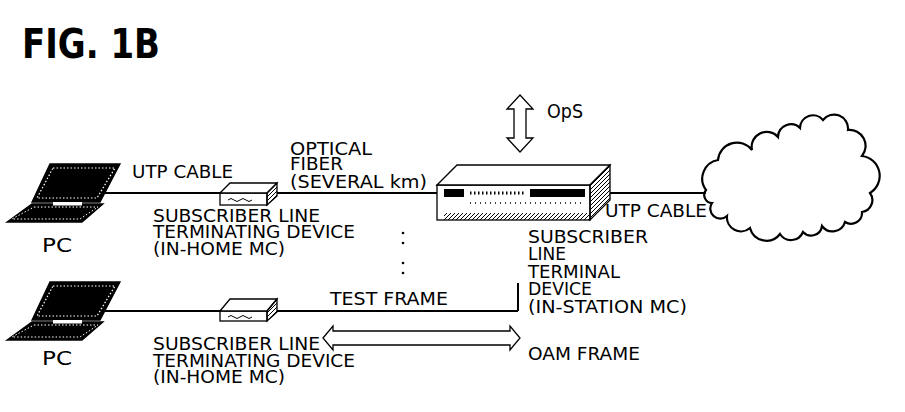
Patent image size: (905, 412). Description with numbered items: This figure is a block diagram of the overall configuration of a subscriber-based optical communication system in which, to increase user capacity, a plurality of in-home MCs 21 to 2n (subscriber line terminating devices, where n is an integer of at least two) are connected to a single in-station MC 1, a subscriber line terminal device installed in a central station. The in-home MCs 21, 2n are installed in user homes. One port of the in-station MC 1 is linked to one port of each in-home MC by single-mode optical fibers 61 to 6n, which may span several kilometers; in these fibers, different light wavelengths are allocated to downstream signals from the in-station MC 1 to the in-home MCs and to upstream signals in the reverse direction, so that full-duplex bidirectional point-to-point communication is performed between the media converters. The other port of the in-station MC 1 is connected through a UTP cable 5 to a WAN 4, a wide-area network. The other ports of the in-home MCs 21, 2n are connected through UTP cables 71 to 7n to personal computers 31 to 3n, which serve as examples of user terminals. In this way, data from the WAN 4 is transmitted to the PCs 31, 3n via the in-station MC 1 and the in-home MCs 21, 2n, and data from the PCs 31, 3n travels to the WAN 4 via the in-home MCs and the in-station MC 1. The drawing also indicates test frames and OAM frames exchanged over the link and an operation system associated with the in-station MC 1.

The in-station MC 1 is at (590, 165).
The in-home MC 21 is at (247, 182).
The in-home MC 2n is at (230, 301).
The personal computer 31 is at (79, 164).
The personal computer 3n is at (92, 282).
The WAN 4 is at (768, 135).
The UTP cable 5 is at (640, 191).
The optical fiber 61 is at (432, 190).
The optical fiber 6n is at (470, 310).
The UTP cable 71 is at (125, 193).
The UTP cable 7n is at (113, 311).